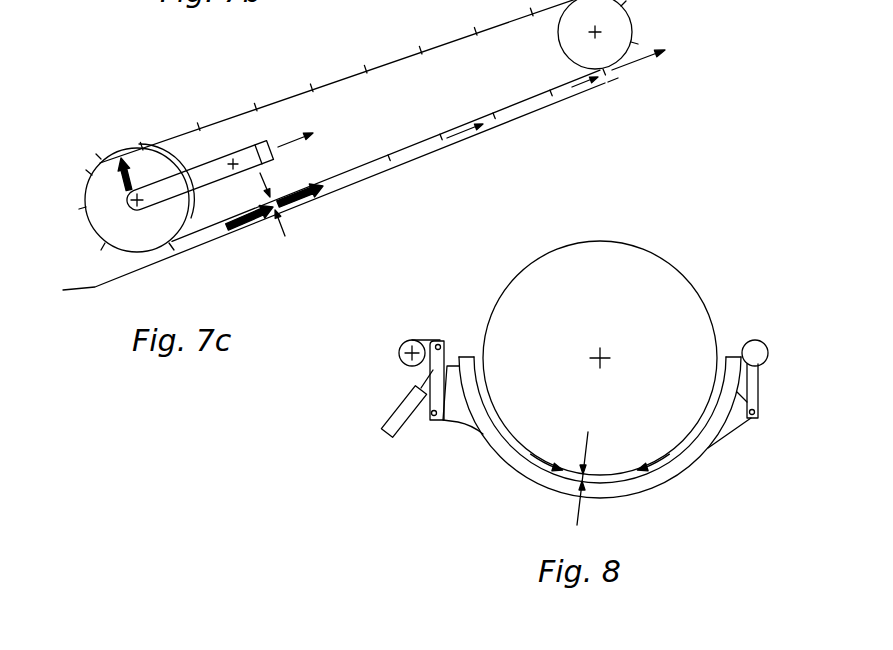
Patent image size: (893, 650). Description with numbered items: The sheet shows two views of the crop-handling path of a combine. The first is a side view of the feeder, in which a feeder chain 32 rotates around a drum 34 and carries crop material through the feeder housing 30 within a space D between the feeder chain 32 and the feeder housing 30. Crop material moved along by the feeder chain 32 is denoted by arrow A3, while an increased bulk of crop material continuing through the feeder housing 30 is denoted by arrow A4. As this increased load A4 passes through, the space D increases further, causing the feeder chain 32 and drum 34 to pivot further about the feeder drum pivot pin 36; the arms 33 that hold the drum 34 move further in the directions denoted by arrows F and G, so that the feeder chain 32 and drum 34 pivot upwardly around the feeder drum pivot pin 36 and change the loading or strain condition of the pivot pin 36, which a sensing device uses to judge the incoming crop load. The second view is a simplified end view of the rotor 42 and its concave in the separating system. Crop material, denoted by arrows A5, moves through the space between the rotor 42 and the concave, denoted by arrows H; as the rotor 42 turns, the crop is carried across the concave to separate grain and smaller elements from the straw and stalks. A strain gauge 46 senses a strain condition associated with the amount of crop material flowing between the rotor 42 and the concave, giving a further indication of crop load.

In FIG. 7C, the feeder housing 30 is at (383, 172).
In FIG. 7C, the feeder chain 32 is at (425, 140).
In FIG. 7C, the arm 33 is at (193, 163).
In FIG. 7C, the drum 34 is at (148, 252).
In FIG. 7C, the feeder drum pivot pin 36 is at (260, 152).
In FIG. 7C, the arrow F is at (127, 184).
In FIG. 7C, the arrow G is at (280, 143).
In FIG. 7C, the space D is at (290, 238).
In FIG. 7C, the arrow A3 is at (455, 128).
In FIG. 7C, the arrow A4 is at (304, 206).
In FIG. 8, the rotor 42 is at (582, 313).
In FIG. 8, the strain gauge 46 is at (433, 364).
In FIG. 8, the arrow A5 is at (533, 474).
In FIG. 8, the space H is at (577, 511).